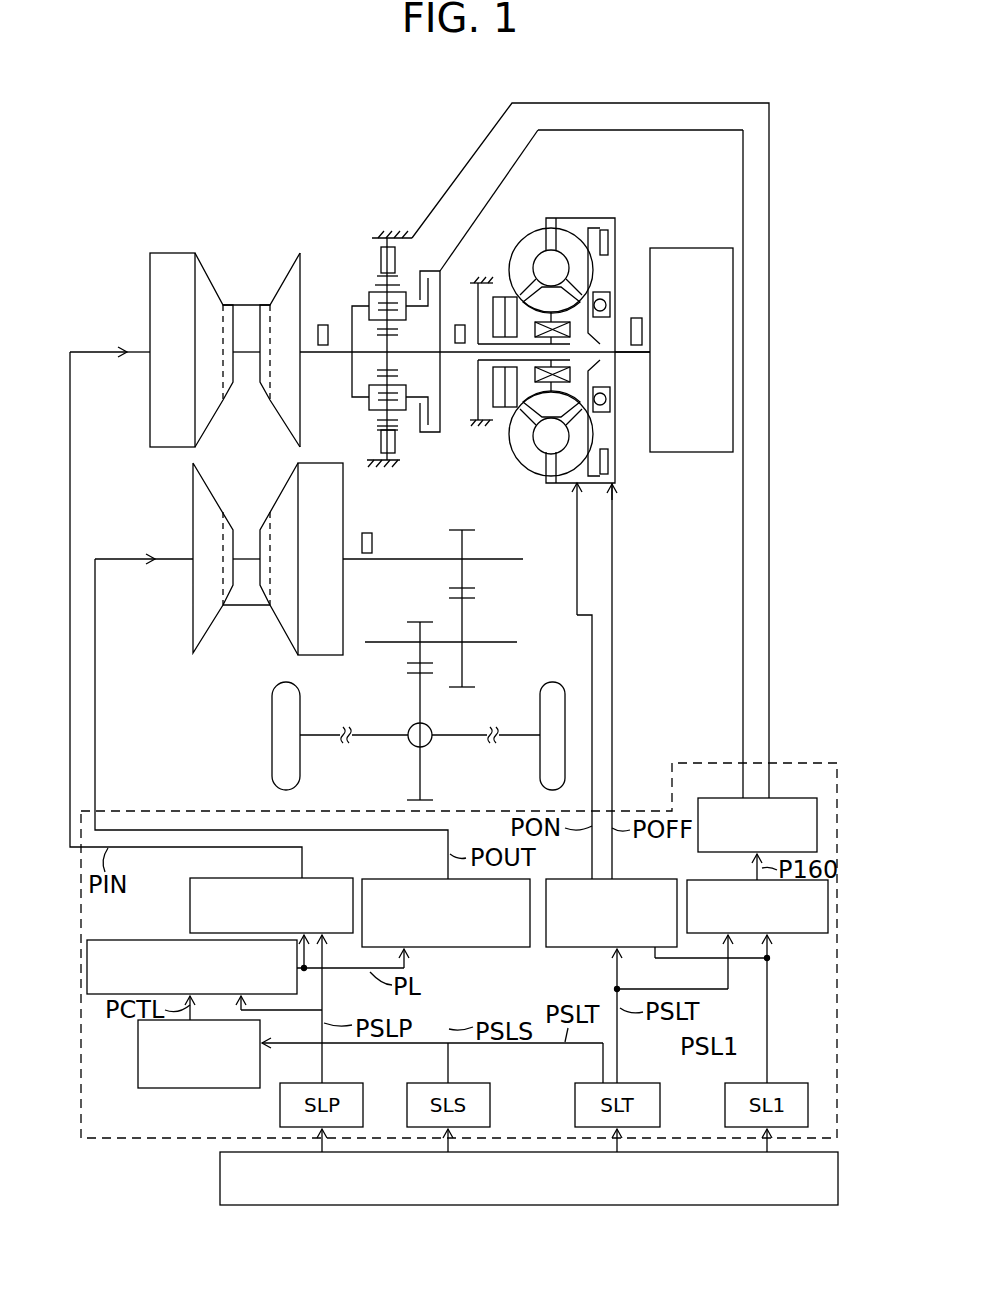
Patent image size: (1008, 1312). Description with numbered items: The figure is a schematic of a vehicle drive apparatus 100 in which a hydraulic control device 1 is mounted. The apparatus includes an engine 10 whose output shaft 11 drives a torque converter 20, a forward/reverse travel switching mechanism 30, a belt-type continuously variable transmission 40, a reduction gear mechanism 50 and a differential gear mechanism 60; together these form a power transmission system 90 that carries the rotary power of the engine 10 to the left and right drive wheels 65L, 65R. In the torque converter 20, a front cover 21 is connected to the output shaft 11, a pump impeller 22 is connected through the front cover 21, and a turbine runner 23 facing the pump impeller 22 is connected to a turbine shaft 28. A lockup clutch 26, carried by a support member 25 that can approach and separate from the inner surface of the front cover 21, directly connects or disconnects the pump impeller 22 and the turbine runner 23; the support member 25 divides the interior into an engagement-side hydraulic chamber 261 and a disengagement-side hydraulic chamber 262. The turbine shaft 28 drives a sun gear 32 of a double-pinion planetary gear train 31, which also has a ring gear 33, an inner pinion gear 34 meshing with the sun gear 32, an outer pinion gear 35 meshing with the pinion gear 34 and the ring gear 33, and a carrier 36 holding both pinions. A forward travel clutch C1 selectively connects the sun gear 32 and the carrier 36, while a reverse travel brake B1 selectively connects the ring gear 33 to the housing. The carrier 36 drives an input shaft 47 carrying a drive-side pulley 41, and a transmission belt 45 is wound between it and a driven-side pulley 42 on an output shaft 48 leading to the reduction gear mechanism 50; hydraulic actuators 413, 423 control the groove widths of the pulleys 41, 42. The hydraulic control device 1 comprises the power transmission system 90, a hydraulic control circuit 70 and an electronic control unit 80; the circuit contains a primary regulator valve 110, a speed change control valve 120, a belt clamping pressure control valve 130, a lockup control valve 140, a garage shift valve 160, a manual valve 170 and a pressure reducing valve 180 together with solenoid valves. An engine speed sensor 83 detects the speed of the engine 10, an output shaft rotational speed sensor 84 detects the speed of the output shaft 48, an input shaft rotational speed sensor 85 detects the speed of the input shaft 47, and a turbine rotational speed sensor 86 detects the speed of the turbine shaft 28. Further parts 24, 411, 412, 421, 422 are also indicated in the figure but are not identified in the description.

The hydraulic control device 1 is at (806, 746).
The engine 10 is at (697, 243).
The output shaft 11 is at (633, 355).
The torque converter 20 is at (584, 347).
The front cover 21 is at (566, 221).
The pump impeller 22 is at (512, 446).
The turbine runner 23 is at (590, 487).
The one-way clutch 24 is at (535, 462).
The support member 25 is at (506, 436).
The lockup clutch 26 is at (616, 488).
The engagement-side hydraulic chamber 261 is at (558, 490).
The disengagement-side hydraulic chamber 262 is at (610, 437).
The turbine shaft 28 is at (466, 360).
The forward/reverse travel switching mechanism 30 is at (383, 308).
The planetary gear train 31 is at (370, 258).
The sun gear 32 is at (364, 390).
The ring gear 33 is at (396, 437).
The pinion gear 34 is at (368, 310).
The pinion gear 35 is at (378, 287).
The carrier 36 is at (402, 393).
The reverse travel brake B1 is at (395, 257).
The forward travel clutch C1 is at (436, 270).
The continuously variable transmission 40 is at (245, 220).
The drive-side pulley 41 is at (189, 307).
The fixed sheave of primary pulley 411 is at (284, 290).
The movable sheave of primary pulley 412 is at (211, 283).
The hydraulic actuator 413 is at (162, 306).
The driven-side pulley 42 is at (267, 609).
The fixed sheave of secondary pulley 421 is at (200, 627).
The movable sheave of secondary pulley 422 is at (290, 636).
The hydraulic actuator 423 is at (330, 517).
The transmission belt 45 is at (244, 303).
The input shaft 47 is at (325, 362).
The output shaft 48 is at (410, 562).
The reduction gear mechanism 50 is at (493, 627).
The differential gear mechanism 60 is at (412, 748).
The left drive wheel 65L is at (272, 737).
The right drive wheel 65R is at (540, 750).
The hydraulic control circuit 70 is at (112, 1142).
The electronic control unit 80 is at (220, 1180).
The engine speed sensor 83 is at (636, 317).
The output shaft rotational speed sensor 84 is at (368, 533).
The input shaft rotational speed sensor 85 is at (323, 324).
The turbine rotational speed sensor 86 is at (460, 323).
The power transmission system 90 is at (190, 140).
The vehicle drive apparatus 100 is at (98, 108).
The primary regulator valve 110 is at (137, 940).
The speed change control valve 120 is at (190, 890).
The belt clamping pressure control valve 130 is at (400, 879).
The lockup control valve 140 is at (560, 879).
The garage shift valve 160 is at (718, 880).
The manual valve 170 is at (784, 799).
The pressure reducing valve 180 is at (138, 1043).